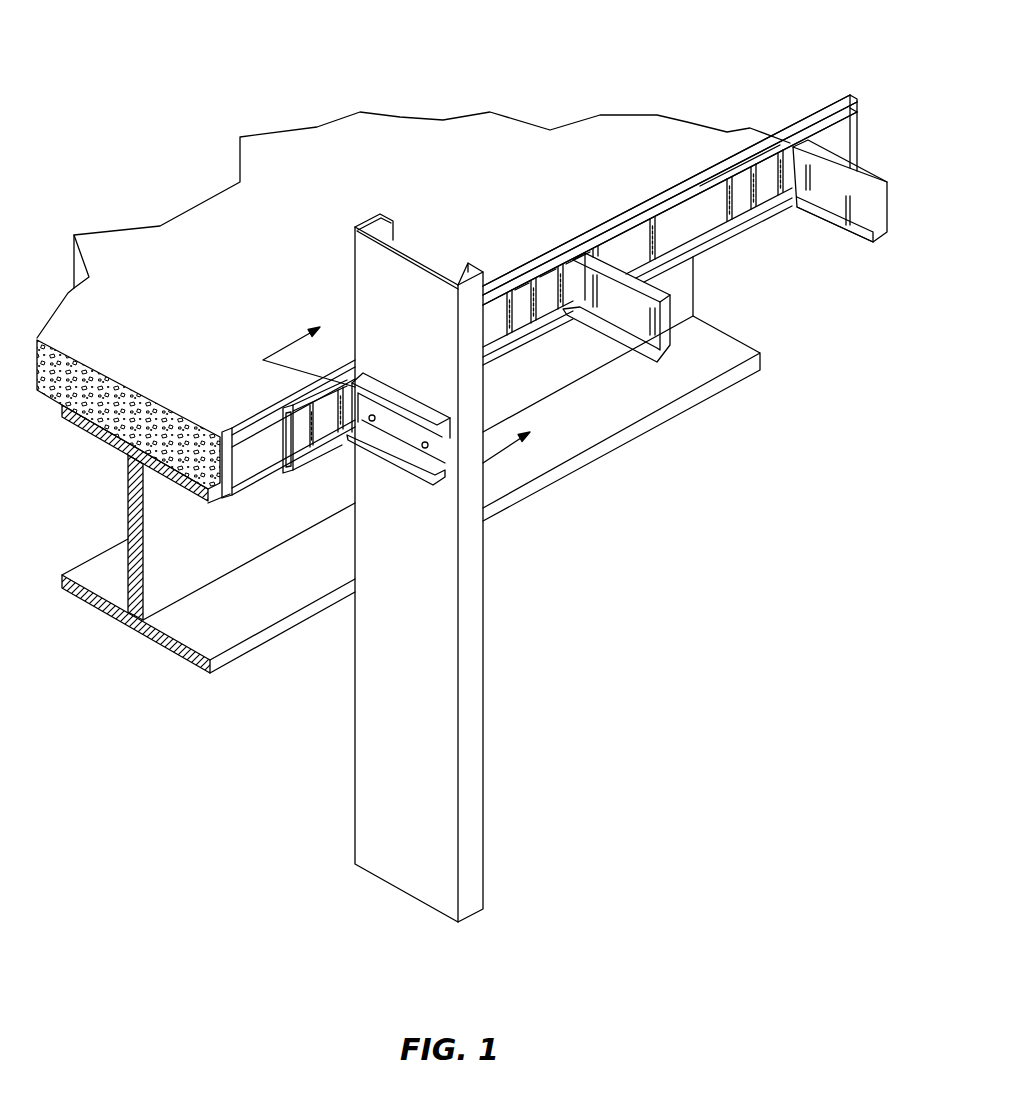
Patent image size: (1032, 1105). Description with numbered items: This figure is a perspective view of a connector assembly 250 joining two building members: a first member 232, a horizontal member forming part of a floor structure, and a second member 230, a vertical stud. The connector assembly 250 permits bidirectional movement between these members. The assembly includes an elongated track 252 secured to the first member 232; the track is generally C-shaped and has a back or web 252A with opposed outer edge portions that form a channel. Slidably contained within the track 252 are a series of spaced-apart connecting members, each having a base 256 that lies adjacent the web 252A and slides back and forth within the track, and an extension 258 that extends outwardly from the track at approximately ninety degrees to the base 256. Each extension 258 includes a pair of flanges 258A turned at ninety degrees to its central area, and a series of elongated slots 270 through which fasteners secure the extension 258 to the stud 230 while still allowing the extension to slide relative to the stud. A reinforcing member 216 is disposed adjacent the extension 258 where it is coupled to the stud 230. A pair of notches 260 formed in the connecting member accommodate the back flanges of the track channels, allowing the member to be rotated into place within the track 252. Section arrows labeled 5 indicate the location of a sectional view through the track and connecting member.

The reinforcing member 216 is at (385, 437).
The second member 230 is at (443, 640).
The first member 232 is at (187, 488).
The connector assembly 250 is at (268, 392).
The elongated track 252 is at (840, 103).
The web 252A is at (632, 252).
The base 256 is at (765, 187).
The extension 258 is at (633, 318).
The flanges 258A is at (863, 172).
The notches 260 is at (780, 140).
The elongated slots 270 is at (847, 202).
The section line 5 is at (408, 386).